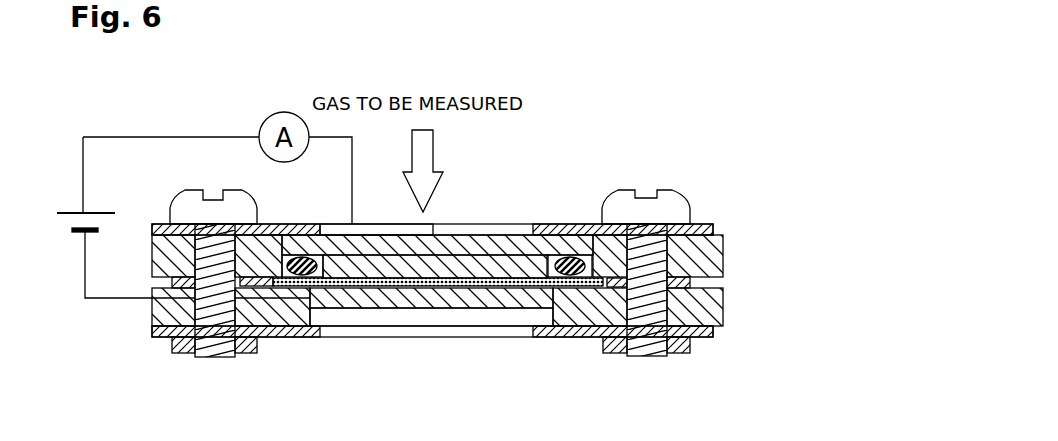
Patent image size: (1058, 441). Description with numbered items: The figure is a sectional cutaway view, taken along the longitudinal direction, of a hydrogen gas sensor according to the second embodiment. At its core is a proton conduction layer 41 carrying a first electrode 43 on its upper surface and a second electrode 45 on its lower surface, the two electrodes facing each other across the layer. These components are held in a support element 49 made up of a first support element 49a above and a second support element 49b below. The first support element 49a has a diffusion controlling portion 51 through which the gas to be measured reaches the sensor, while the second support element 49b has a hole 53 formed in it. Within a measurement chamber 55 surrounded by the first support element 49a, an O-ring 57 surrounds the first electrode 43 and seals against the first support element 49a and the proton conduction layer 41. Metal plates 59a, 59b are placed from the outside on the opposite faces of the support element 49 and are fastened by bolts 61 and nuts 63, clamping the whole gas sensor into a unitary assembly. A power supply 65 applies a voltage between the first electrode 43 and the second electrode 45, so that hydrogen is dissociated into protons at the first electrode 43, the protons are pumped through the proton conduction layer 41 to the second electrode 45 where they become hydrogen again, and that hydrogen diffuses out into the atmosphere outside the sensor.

The proton conduction layer 41 is at (505, 262).
The first electrode 43 is at (479, 278).
The second electrode 45 is at (370, 298).
The support element 49 is at (494, 270).
The first support element 49a is at (706, 257).
The second support element 49b is at (706, 300).
The diffusion controlling portion 51 is at (433, 235).
The hole 53 is at (456, 314).
The measurement chamber 55 is at (330, 255).
The O-ring 57 is at (568, 257).
The metal plate 59a is at (712, 225).
The metal plate 59b is at (706, 337).
The bolt 61 is at (668, 205).
The nut 63 is at (677, 355).
The power supply 65 is at (73, 234).